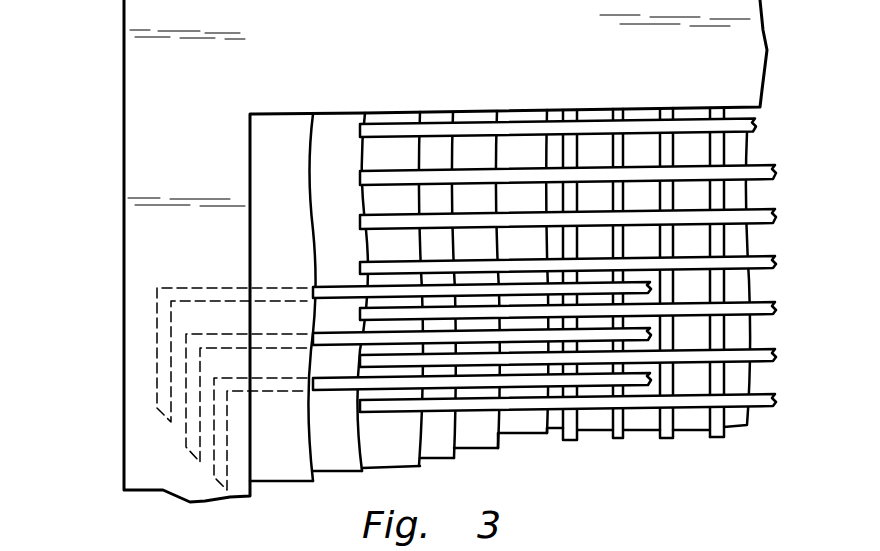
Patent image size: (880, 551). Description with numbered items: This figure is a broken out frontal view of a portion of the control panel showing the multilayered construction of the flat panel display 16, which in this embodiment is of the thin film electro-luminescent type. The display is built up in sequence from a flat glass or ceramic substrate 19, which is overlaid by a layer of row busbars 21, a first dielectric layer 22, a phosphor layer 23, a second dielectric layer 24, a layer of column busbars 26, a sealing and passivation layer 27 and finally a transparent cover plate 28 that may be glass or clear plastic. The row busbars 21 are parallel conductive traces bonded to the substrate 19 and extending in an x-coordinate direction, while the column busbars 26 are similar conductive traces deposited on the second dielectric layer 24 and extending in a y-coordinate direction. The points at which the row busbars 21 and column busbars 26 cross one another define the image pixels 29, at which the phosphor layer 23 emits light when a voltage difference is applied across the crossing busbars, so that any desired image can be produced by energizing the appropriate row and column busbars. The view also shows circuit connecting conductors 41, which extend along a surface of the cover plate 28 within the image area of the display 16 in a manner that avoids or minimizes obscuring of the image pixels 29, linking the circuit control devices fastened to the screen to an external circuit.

The flat panel display 16 is at (124, 146).
The substrate 19 is at (733, 115).
The row busbars 21 is at (667, 115).
The first dielectric layer 22 is at (510, 115).
The phosphor layer 23 is at (466, 115).
The second dielectric layer 24 is at (428, 115).
The column busbars 26 is at (382, 132).
The sealing and passivation layer 27 is at (337, 121).
The transparent cover plate 28 is at (268, 114).
The image pixels 29 is at (699, 380).
The circuit connecting conductors 41 is at (270, 315).